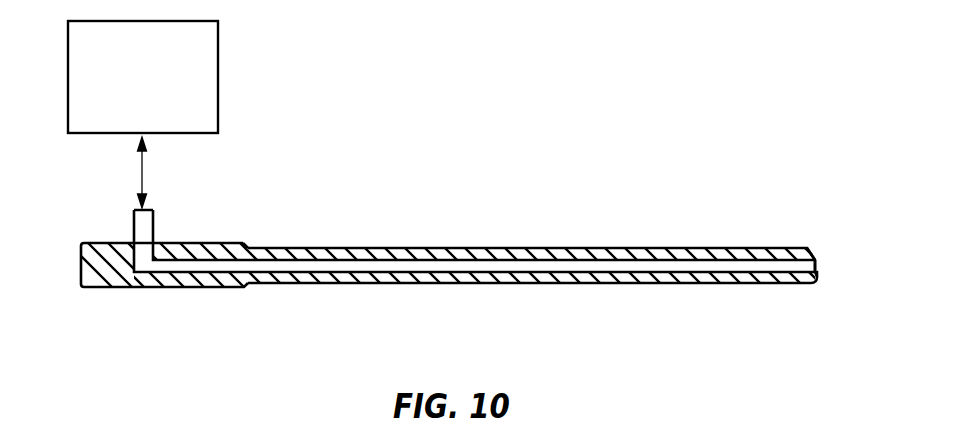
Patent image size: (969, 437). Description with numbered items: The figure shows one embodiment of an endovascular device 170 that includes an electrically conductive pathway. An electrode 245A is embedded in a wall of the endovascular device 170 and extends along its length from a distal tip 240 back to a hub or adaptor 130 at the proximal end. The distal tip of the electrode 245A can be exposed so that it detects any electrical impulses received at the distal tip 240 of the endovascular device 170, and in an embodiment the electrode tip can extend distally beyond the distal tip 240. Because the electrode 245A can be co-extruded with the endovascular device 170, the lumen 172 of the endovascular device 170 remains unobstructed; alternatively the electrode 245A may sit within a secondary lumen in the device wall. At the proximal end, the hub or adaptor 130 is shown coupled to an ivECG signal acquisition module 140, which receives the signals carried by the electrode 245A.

The ivECG signal acquisition module 140 is at (208, 81).
The hub or adaptor 130 is at (120, 287).
The endovascular device 170 is at (605, 215).
The electrode 245A is at (492, 248).
The lumen 172 is at (313, 267).
The distal tip 240 is at (808, 250).